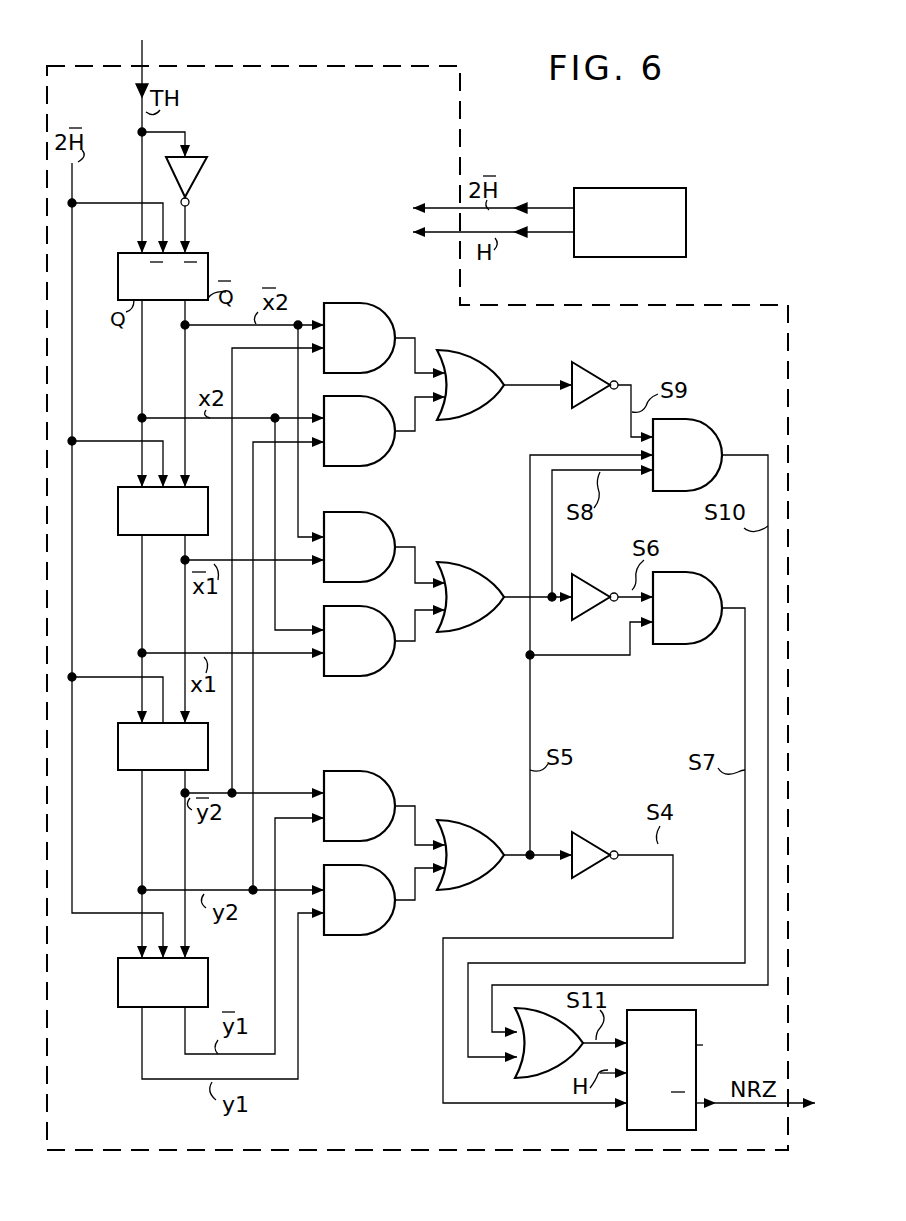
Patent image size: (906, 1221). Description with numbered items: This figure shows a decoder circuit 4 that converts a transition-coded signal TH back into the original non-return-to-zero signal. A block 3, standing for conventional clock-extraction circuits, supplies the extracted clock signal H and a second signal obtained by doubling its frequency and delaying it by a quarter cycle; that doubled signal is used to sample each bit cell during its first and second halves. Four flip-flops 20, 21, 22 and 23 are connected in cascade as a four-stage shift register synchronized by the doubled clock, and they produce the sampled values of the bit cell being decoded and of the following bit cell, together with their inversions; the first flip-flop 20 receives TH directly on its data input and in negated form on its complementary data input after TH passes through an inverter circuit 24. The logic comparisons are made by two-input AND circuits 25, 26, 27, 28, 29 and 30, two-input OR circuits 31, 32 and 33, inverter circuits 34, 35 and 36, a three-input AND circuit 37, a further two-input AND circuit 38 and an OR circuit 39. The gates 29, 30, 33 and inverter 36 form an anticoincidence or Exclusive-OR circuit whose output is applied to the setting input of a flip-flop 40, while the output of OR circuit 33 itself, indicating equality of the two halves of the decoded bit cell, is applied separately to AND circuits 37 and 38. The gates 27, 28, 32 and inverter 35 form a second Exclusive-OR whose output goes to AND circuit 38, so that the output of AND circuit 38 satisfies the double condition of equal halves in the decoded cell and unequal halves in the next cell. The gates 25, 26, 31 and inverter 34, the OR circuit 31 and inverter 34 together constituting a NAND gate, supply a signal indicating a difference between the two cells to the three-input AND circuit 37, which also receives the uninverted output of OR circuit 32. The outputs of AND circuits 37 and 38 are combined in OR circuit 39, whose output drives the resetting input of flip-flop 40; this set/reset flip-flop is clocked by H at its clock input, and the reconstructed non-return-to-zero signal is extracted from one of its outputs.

The block 3 is at (604, 188).
The decoder circuit 4 is at (463, 128).
The flip-flop 20 is at (118, 272).
The flip-flop 21 is at (118, 509).
The flip-flop 22 is at (118, 743).
The flip-flop 23 is at (118, 979).
The inverter circuit 24 is at (204, 161).
The AND circuit 25 is at (360, 302).
The AND circuit 26 is at (384, 463).
The AND circuit 27 is at (358, 512).
The AND circuit 28 is at (358, 682).
The AND circuit 29 is at (358, 770).
The AND circuit 30 is at (372, 935).
The OR circuit 31 is at (506, 352).
The OR circuit 32 is at (538, 576).
The OR circuit 33 is at (464, 822).
The inverter circuit 34 is at (596, 362).
The inverter circuit 35 is at (594, 574).
The inverter circuit 36 is at (594, 836).
The three-input AND circuit 37 is at (712, 418).
The AND circuit 38 is at (710, 572).
The OR circuit 39 is at (534, 1078).
The flip-flop 40 is at (670, 1010).